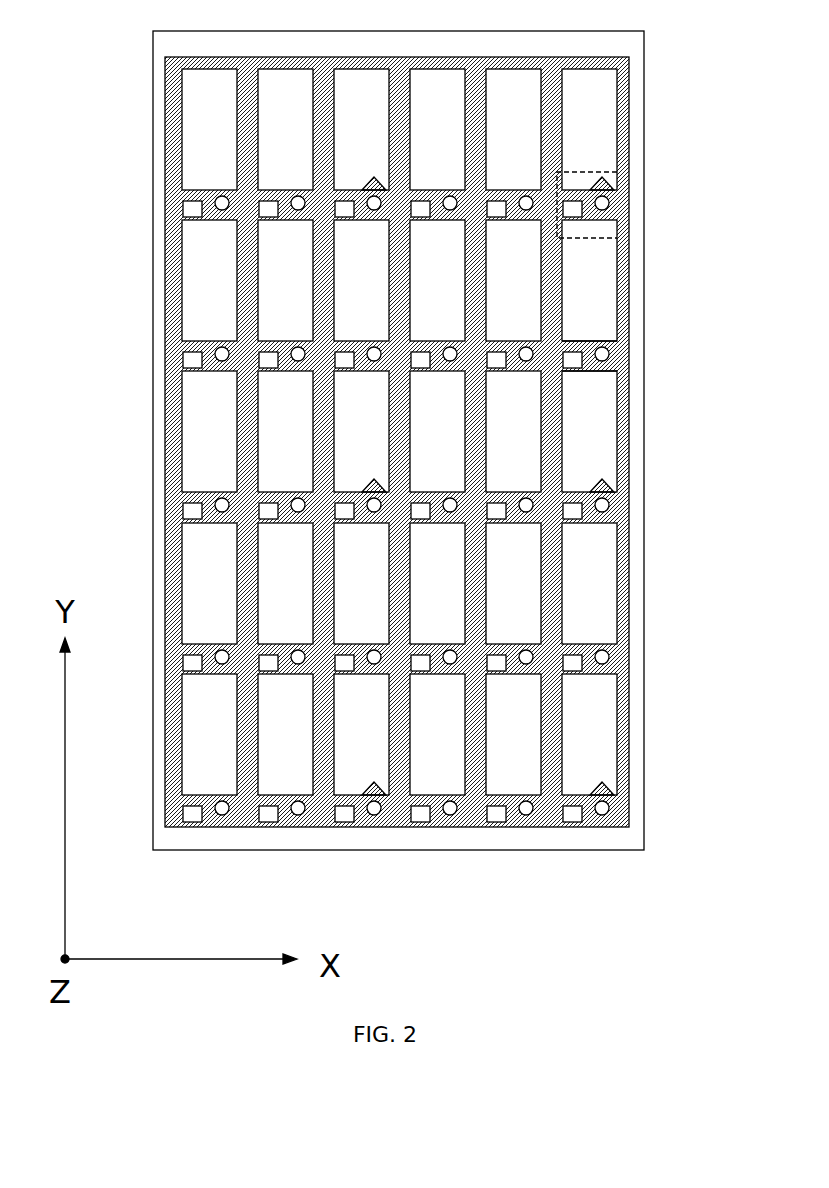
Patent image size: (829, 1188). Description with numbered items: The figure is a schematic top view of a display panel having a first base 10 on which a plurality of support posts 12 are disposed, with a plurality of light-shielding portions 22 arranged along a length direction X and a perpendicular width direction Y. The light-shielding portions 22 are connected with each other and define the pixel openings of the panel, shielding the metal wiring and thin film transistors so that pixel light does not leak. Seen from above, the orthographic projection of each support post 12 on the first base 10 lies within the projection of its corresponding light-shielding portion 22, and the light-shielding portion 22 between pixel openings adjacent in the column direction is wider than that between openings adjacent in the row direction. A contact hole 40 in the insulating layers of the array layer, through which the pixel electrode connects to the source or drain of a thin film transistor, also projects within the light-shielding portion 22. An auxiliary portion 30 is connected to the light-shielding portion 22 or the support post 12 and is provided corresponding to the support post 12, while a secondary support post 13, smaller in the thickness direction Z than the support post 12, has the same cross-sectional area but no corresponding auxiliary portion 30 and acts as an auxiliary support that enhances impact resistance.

The first base 10 is at (645, 482).
The support post 12 is at (611, 352).
The secondary support post 13 is at (608, 654).
The light-shielding portion 22 is at (606, 213).
The auxiliary portion 30 is at (607, 186).
The contact hole 40 is at (598, 339).